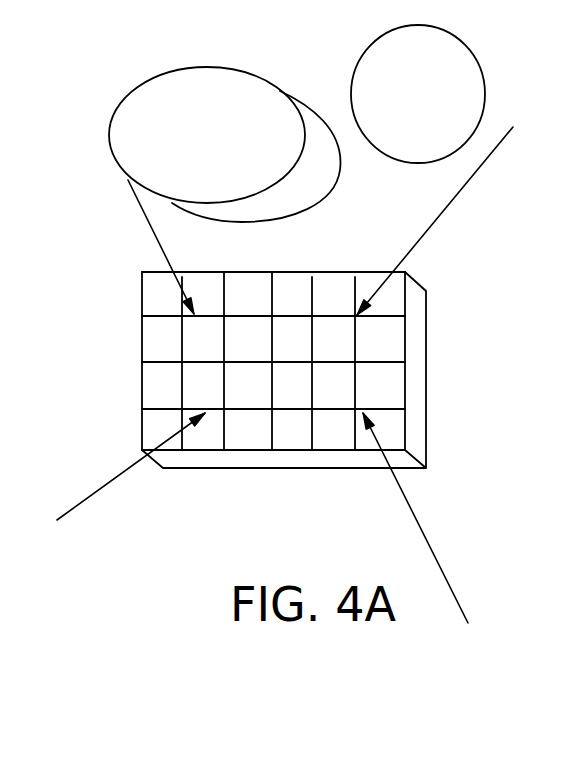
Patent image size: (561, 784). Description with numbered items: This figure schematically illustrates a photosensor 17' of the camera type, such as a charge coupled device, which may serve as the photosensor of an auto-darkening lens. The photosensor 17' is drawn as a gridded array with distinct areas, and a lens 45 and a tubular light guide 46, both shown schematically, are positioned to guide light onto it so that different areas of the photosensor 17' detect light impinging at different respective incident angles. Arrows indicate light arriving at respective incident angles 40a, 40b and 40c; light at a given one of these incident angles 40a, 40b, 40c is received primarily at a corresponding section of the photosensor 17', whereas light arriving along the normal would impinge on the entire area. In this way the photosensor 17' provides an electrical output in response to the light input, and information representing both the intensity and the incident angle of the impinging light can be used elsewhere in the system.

The photosensor 17' is at (232, 345).
The incident angle 40a is at (165, 252).
The incident angle 40b is at (458, 193).
The incident angle 40c is at (435, 553).
The lens 45 is at (372, 44).
The tubular light guide 46 is at (146, 83).